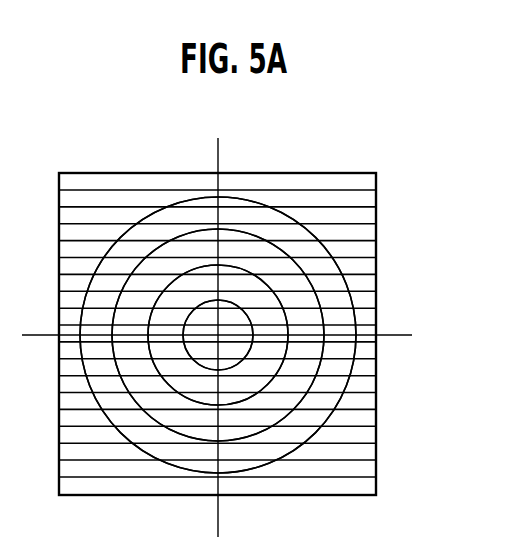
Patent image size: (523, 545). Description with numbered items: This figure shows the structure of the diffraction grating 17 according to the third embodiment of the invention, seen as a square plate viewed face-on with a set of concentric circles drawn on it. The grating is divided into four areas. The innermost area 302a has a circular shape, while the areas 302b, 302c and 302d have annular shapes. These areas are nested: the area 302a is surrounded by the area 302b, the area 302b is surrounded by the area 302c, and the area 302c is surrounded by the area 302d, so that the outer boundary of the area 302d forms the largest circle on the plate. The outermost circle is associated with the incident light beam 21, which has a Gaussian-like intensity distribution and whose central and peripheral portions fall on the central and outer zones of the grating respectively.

The diffraction grating 17 is at (324, 160).
The incident light beam 21 is at (330, 262).
The area 302d is at (327, 265).
The area 302c is at (302, 295).
The area 302b is at (277, 334).
The area 302a is at (240, 352).